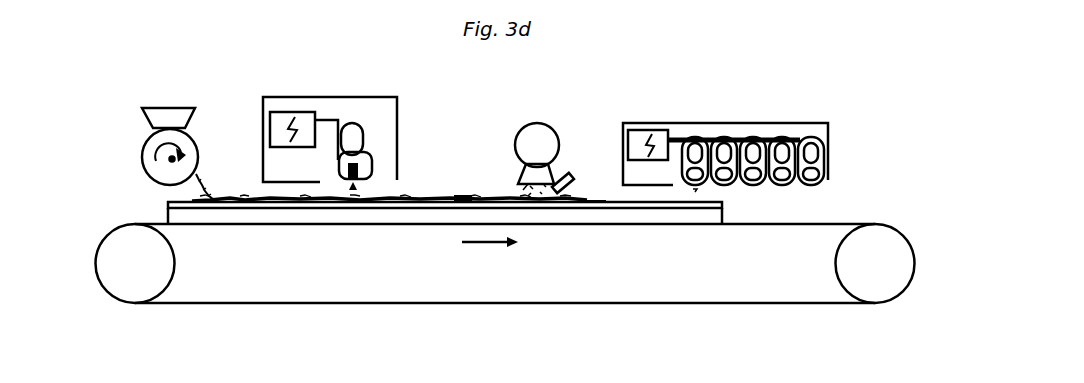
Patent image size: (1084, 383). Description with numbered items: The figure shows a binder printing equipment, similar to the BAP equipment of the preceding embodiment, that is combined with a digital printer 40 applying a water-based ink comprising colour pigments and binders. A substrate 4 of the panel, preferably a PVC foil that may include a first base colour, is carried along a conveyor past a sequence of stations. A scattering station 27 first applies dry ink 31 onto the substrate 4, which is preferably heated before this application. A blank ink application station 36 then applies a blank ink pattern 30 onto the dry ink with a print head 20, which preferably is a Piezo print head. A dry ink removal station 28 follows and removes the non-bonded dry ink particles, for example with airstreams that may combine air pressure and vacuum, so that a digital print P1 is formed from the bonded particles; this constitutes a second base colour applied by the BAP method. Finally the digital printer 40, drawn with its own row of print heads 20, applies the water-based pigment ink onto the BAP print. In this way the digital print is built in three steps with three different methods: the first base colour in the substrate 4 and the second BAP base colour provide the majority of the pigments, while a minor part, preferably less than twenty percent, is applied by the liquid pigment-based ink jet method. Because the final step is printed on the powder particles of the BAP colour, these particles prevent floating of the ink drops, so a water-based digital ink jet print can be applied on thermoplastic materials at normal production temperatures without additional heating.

The substrate 4 is at (167, 202).
The scattering station 27 is at (171, 96).
The dry ink 31 is at (227, 182).
The blank ink application station 36 is at (339, 92).
The print head 20 is at (340, 170).
The blank ink pattern 30 is at (462, 195).
The dry ink removal station 28 is at (537, 114).
The digital print P1 is at (602, 195).
The digital printer 40 is at (650, 114).